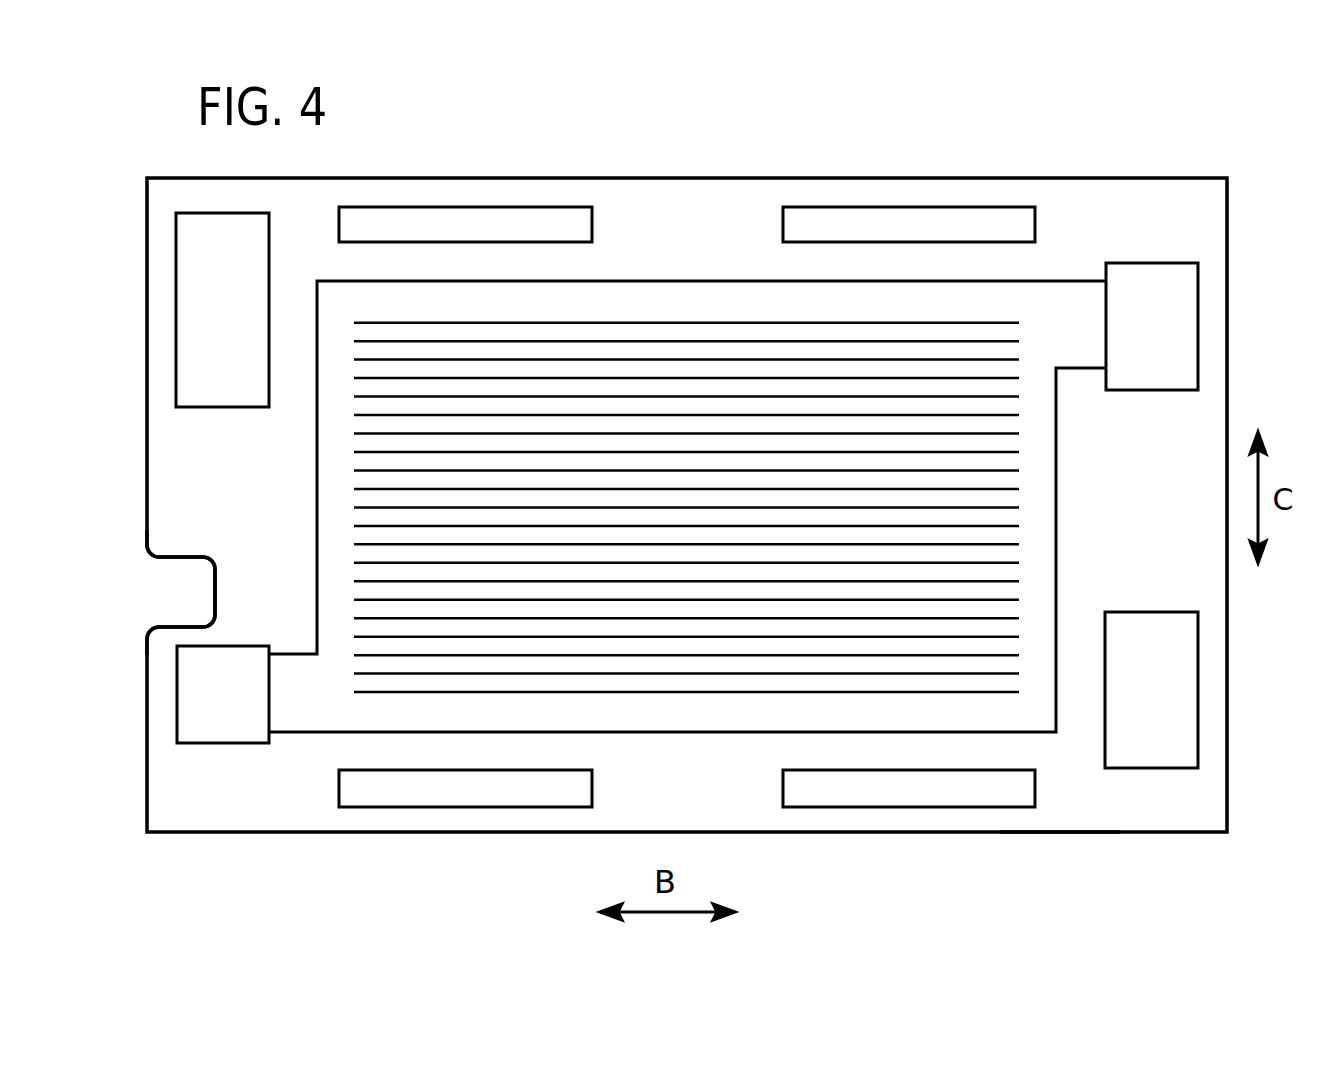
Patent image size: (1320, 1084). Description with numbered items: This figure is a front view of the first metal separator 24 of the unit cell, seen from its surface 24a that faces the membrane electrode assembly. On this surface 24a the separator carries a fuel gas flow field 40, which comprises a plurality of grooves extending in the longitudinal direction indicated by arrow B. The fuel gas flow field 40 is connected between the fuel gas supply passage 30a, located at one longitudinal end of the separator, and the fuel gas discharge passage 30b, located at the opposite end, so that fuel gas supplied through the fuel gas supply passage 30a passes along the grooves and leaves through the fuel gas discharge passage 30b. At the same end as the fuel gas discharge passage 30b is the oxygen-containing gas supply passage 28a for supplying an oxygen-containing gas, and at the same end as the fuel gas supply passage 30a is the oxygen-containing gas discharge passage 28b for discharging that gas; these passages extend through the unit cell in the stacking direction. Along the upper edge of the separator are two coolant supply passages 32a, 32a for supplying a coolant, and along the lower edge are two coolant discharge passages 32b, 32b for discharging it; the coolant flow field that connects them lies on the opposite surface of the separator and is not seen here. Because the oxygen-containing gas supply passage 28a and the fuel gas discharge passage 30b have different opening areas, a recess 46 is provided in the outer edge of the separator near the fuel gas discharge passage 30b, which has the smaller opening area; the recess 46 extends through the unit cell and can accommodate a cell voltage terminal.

The first metal separator 24 is at (845, 153).
The surface 24a is at (1062, 797).
The oxygen-containing gas supply passage 28a is at (222, 310).
The oxygen-containing gas discharge passage 28b is at (1151, 690).
The fuel gas supply passage 30a is at (1152, 326).
The fuel gas discharge passage 30b is at (223, 694).
The coolant supply passages 32a is at (687, 224).
The coolant discharge passages 32b is at (687, 786).
The fuel gas flow field 40 is at (692, 652).
The recess 46 is at (192, 560).